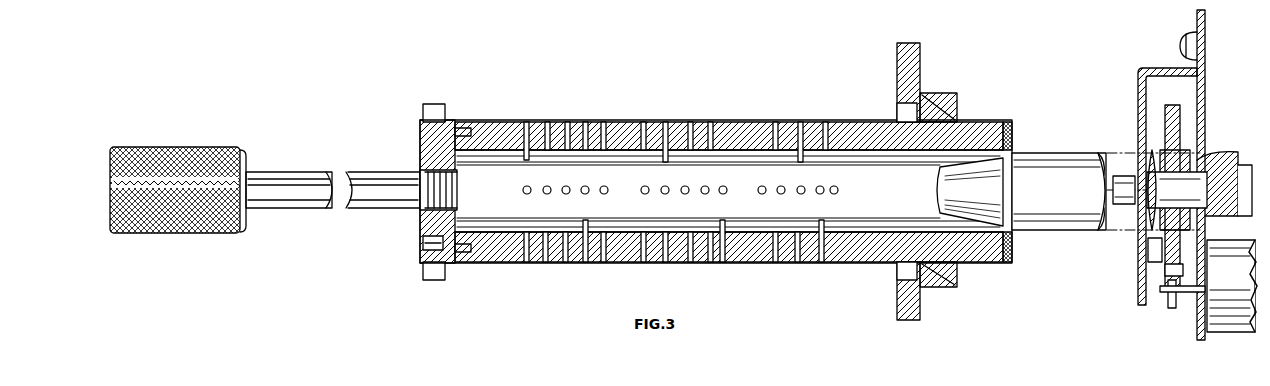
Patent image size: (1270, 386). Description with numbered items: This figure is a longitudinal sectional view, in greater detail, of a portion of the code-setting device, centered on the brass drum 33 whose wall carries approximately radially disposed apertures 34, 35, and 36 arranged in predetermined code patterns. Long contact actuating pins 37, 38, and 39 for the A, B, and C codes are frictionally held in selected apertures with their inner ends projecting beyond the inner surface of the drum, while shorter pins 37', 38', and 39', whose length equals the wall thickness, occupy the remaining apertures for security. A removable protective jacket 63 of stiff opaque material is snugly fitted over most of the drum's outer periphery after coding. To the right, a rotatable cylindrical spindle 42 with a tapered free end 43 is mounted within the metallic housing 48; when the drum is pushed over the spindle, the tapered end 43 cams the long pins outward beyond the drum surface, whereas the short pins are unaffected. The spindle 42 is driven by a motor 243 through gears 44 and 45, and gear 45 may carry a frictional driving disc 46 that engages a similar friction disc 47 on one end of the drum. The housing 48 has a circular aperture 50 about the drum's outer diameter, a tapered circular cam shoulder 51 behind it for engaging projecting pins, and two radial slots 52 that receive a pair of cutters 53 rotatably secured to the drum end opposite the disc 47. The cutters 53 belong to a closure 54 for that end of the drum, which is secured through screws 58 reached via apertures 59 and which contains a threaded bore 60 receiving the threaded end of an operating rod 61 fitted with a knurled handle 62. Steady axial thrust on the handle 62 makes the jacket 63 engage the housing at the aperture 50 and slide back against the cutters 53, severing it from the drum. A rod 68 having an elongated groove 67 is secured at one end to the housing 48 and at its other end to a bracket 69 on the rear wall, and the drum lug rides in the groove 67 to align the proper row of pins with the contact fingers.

The knurled handle 62 is at (244, 152).
The operating rod 61 is at (386, 174).
The threaded bore 60 is at (450, 206).
The closure 54 is at (425, 224).
The cutters 53 is at (437, 104).
The apertures 59 is at (423, 246).
The screws 58 is at (462, 128).
The protective jacket 63 is at (585, 266).
The friction disc 47 is at (1010, 122).
The contact actuating pin 37 is at (523, 130).
The apertures 34 is at (550, 126).
The drum 33 is at (616, 126).
The apertures 35 is at (648, 126).
The contact actuating pin 38 is at (667, 125).
The apertures 36 is at (770, 126).
The contact actuating pin 39 is at (799, 128).
The short pin 37' is at (565, 211).
The short pin 38' is at (683, 211).
The short pin 39' is at (803, 211).
The tapered free end 43 is at (938, 198).
The housing 48 is at (897, 62).
The cam shoulder 51 is at (940, 112).
The slots 52 is at (900, 112).
The circular aperture 50 is at (920, 274).
The spindle 42 is at (1070, 158).
The bracket 69 is at (1138, 118).
The rod 68 is at (1138, 178).
The elongated groove 67 is at (1150, 204).
The frictional driving disc 46 is at (1148, 252).
The gear 45 is at (1165, 270).
The gear 44 is at (1168, 298).
The motor 243 is at (1250, 248).